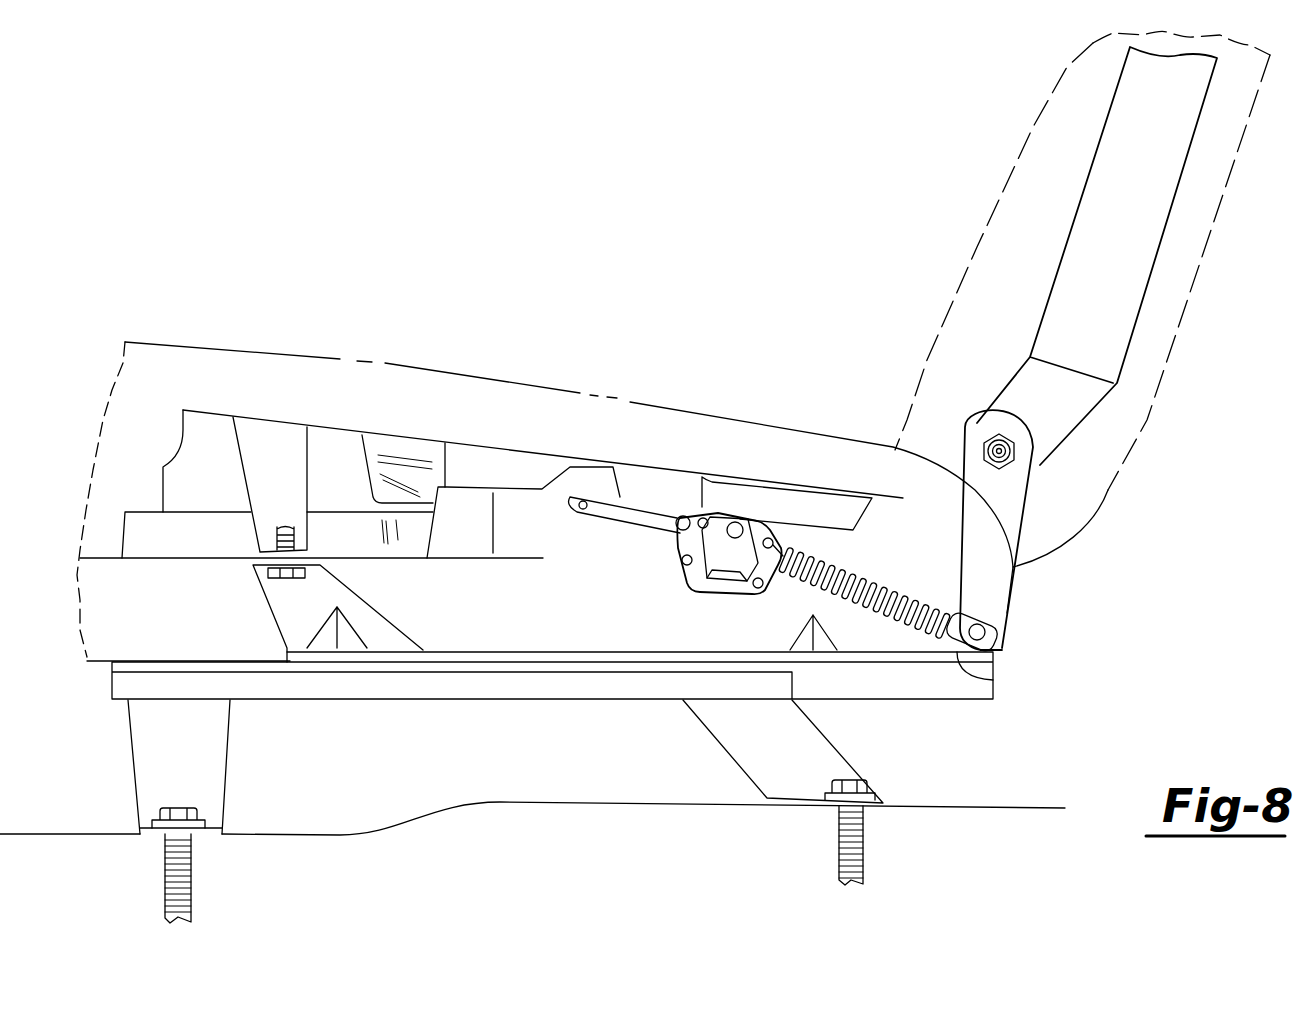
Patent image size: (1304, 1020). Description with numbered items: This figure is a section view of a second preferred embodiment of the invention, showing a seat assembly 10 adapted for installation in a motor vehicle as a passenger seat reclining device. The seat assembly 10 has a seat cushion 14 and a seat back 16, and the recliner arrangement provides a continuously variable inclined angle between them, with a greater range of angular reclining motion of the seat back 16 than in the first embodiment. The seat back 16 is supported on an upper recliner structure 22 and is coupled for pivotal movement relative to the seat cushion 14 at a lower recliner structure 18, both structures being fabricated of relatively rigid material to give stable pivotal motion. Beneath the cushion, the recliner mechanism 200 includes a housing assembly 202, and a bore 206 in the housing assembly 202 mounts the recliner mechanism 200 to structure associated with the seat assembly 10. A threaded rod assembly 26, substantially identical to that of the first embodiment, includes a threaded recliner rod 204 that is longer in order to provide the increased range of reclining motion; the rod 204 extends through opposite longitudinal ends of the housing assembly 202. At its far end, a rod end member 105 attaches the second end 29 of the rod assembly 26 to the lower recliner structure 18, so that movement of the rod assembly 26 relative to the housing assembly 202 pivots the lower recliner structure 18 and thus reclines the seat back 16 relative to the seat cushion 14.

The seat assembly 10 is at (405, 316).
The seat cushion 14 is at (633, 402).
The seat back 16 is at (1170, 353).
The lower recliner structure 18 is at (1000, 573).
The upper recliner structure 22 is at (1173, 210).
The threaded rod assembly 26 is at (866, 577).
The second end 29 is at (997, 680).
The rod end member 105 is at (987, 630).
The recliner mechanism 200 is at (716, 592).
The housing assembly 202 is at (778, 542).
The threaded recliner rod 204 is at (876, 579).
The bore 206 is at (677, 521).